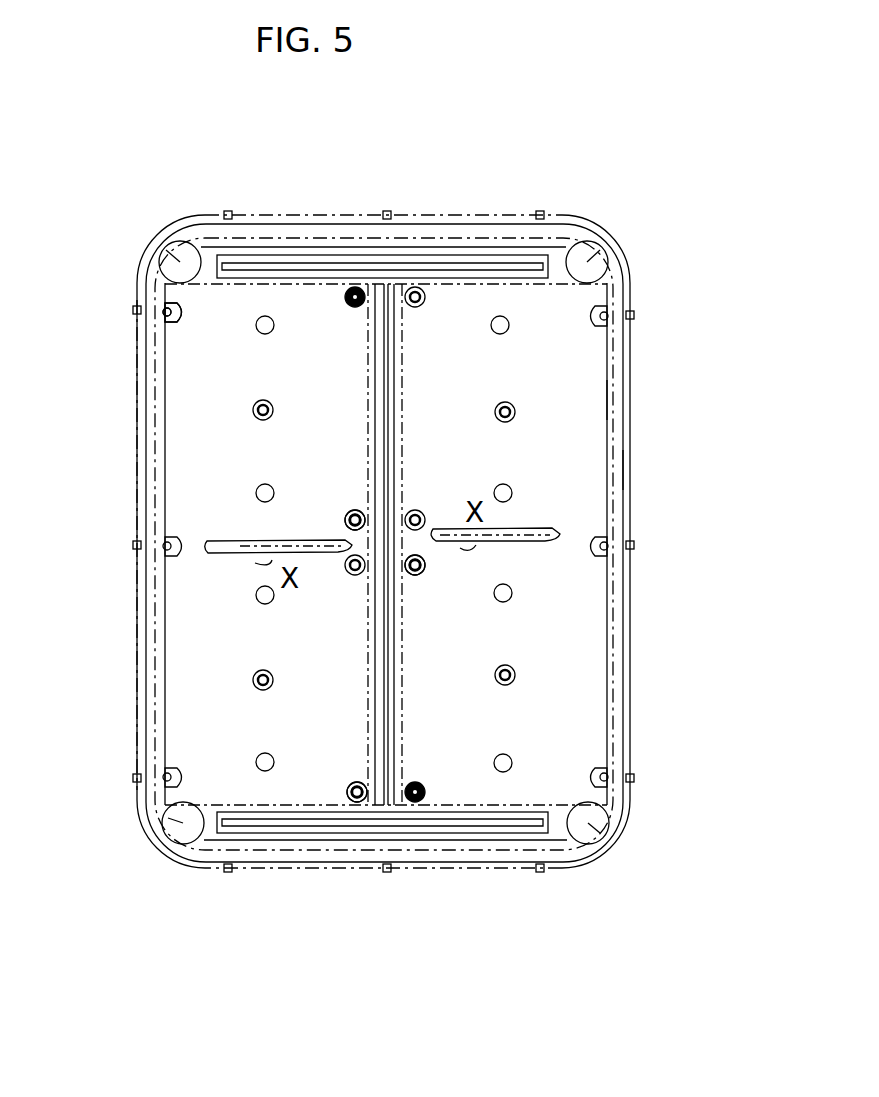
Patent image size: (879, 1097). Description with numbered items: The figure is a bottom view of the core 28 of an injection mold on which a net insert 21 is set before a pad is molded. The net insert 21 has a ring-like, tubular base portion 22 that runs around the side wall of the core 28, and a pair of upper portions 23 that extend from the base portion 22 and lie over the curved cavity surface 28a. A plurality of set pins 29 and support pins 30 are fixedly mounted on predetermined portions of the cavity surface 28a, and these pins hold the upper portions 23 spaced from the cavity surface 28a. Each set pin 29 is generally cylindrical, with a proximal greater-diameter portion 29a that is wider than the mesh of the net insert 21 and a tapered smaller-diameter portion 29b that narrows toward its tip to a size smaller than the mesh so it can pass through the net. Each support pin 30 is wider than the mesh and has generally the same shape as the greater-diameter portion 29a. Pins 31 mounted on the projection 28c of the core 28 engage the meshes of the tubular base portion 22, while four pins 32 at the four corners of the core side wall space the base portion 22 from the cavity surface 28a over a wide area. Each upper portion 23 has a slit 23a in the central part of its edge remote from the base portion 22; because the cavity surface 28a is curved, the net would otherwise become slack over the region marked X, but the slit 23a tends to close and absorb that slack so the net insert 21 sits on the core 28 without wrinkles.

The net insert 21 is at (640, 340).
The base portion 22 is at (138, 400).
The upper portion 23 is at (172, 452).
The slit 23a is at (275, 540).
The core 28 is at (655, 248).
The cavity surface 28a is at (580, 395).
The projection 28c is at (622, 470).
The set pin 29 is at (178, 322).
The greater-diameter portion 29a is at (160, 325).
The smaller-diameter portion 29b is at (165, 314).
The support pin 30 is at (266, 334).
The pin 31 is at (228, 212).
The pin 32 is at (172, 256).